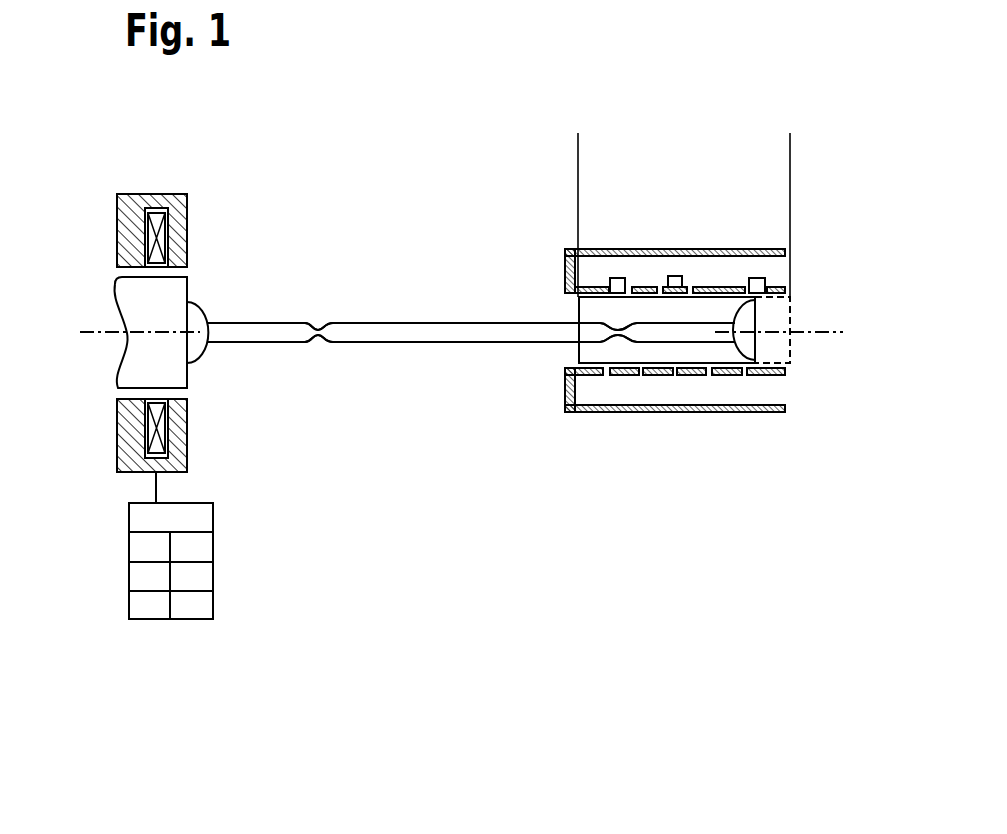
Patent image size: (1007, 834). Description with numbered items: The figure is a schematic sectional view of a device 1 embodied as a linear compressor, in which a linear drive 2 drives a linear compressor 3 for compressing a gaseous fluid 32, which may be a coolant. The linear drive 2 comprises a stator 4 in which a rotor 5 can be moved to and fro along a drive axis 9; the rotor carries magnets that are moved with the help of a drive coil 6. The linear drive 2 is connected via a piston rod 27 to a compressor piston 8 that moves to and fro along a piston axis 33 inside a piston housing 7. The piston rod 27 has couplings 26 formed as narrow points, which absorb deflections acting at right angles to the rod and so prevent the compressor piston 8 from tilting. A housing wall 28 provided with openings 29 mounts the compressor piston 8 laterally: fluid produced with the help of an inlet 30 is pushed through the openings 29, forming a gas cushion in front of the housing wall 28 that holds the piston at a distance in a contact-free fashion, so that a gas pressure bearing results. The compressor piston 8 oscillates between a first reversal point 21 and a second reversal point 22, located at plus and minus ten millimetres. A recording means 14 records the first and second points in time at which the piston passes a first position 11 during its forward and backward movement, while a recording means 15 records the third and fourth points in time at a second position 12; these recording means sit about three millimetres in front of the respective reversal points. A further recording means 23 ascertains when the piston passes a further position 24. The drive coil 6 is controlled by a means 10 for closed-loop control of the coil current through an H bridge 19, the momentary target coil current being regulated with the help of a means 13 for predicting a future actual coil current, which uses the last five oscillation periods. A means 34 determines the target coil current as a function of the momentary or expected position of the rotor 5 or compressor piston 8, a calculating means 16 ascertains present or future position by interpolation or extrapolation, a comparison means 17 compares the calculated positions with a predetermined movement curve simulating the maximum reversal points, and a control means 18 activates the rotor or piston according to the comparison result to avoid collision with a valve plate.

The device 1 is at (518, 508).
The linear drive 2 is at (215, 272).
The linear compressor 3 is at (520, 177).
The stator 4 is at (188, 458).
The rotor 5 is at (135, 300).
The drive coil 6 is at (163, 209).
The piston housing 7 is at (690, 412).
The compressor piston 8 is at (727, 312).
The drive axis 9 is at (92, 332).
The means for closed-loop control of the coil current 10 is at (129, 621).
The first position 11 is at (606, 282).
The second position 12 is at (776, 281).
The means for predicting a future actual coil current 13 is at (202, 547).
The recording means 14 is at (617, 278).
The recording means 15 is at (759, 277).
The calculating means 16 is at (202, 578).
The comparison means 17 is at (140, 578).
The control means 18 is at (202, 606).
The H bridge 19 is at (140, 549).
The first reversal point 21 is at (579, 201).
The second reversal point 22 is at (790, 201).
The further recording means 23 is at (675, 276).
The further position 24 is at (690, 274).
The couplings 26 is at (322, 322).
The piston rod 27 is at (397, 343).
The housing wall 28 is at (586, 377).
The openings 29 is at (608, 377).
The inlet 30 is at (730, 392).
The gaseous fluid 32 is at (783, 348).
The piston axis 33 is at (850, 330).
The means for determining a target coil current 34 is at (140, 520).